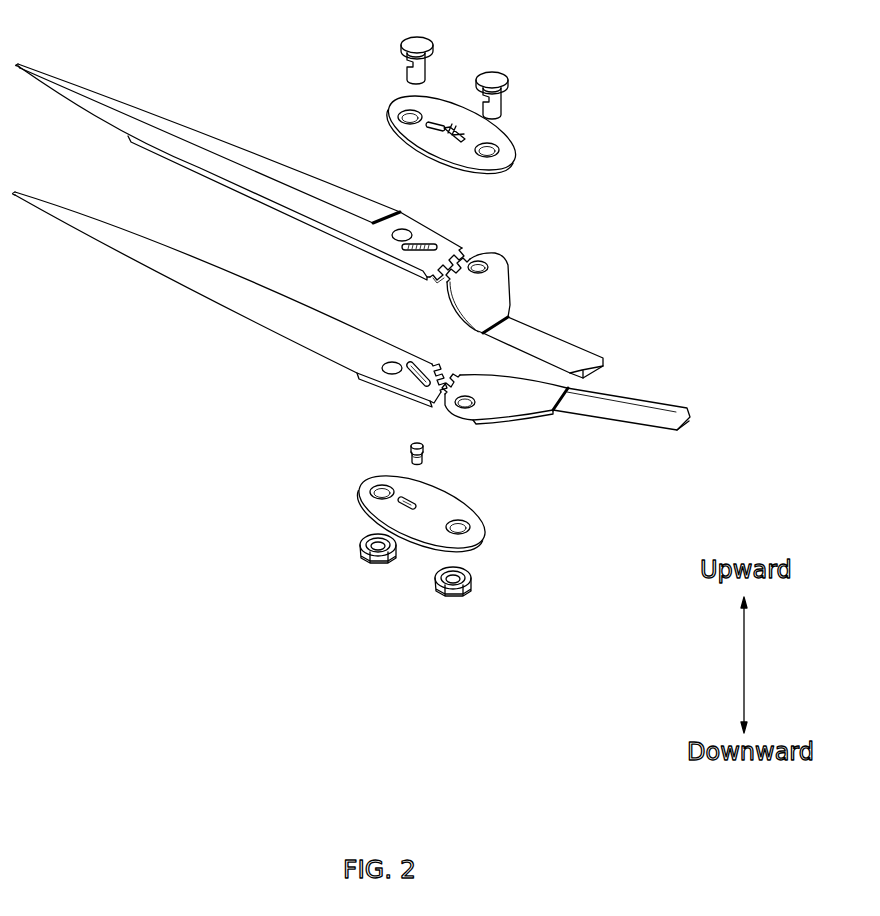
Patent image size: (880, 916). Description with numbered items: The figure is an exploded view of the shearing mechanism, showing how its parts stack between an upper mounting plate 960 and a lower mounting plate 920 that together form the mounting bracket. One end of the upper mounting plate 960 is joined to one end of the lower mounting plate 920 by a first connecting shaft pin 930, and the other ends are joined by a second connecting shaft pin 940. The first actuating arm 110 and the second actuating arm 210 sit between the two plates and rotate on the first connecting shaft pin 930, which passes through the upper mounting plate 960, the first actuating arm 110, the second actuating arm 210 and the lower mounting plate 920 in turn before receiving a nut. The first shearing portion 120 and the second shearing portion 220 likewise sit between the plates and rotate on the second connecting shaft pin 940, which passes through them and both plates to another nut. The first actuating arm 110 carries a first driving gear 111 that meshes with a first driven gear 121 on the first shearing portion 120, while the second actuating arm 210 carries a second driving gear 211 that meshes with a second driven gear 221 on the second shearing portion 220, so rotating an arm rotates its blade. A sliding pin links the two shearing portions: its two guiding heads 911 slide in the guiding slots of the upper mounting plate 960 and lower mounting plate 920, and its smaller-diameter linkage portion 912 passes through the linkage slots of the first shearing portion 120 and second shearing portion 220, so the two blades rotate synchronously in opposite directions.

The first actuating arm 110 is at (538, 304).
The first driving gear 111 is at (470, 257).
The first shearing portion 120 is at (297, 173).
The first driven gear 121 is at (449, 250).
The second actuating arm 210 is at (566, 424).
The second driving gear 211 is at (455, 396).
The second shearing portion 220 is at (230, 306).
The second driven gear 221 is at (434, 368).
The guiding head 911 is at (413, 453).
The linkage portion 912 is at (423, 458).
The lower mounting plate 920 is at (421, 516).
The first connecting shaft pin 930 is at (503, 95).
The second connecting shaft pin 940 is at (419, 44).
The upper mounting plate 960 is at (474, 114).